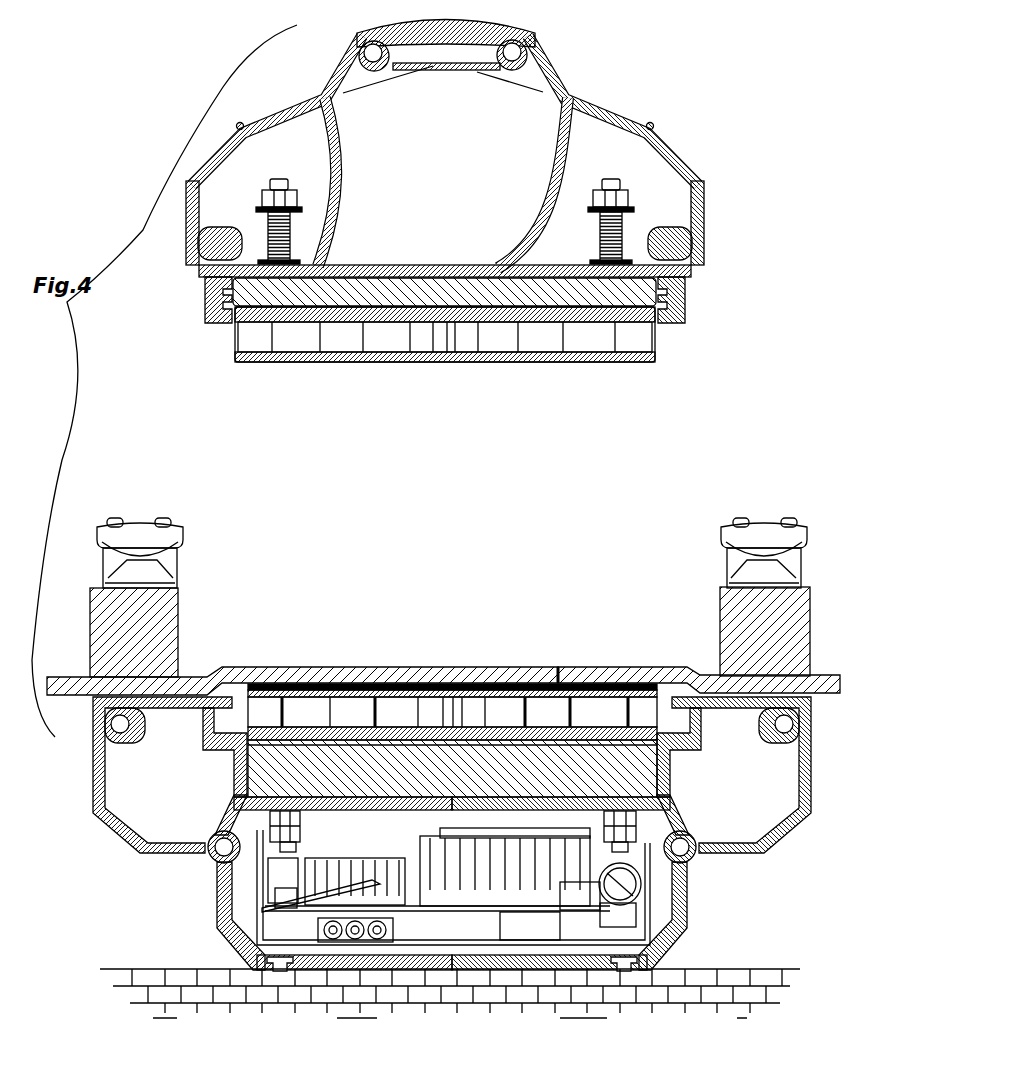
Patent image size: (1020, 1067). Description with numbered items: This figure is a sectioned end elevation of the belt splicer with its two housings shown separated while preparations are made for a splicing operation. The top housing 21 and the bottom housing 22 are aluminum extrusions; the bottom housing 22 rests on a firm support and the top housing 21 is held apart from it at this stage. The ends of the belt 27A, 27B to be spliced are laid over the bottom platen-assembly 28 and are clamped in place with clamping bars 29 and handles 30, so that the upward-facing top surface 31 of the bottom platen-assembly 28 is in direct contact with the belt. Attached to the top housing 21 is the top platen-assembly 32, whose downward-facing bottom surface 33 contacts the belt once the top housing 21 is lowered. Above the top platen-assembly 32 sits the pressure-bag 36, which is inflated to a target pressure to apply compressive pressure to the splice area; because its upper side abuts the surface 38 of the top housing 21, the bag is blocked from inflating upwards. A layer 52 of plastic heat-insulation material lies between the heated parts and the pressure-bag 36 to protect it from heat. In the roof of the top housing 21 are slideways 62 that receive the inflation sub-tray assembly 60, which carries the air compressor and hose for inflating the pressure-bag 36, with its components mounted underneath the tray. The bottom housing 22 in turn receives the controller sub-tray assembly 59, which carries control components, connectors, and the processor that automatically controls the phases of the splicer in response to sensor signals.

The top housing 21 is at (637, 117).
The slideways 62 is at (519, 50).
The inflation sub-tray assembly 60 is at (453, 70).
The surface of the top housing 38 is at (420, 265).
The layer of plastic heat-insulation material 52 is at (290, 317).
The bottom surface of the top platen-assembly 33 is at (380, 362).
The top platen-assembly 32 is at (500, 338).
The pressure-bag 36 is at (592, 290).
The handles 30 is at (147, 530).
The clamping bars 29 is at (165, 628).
The belt end 27A is at (345, 680).
The belt end 27B is at (583, 680).
The top surface of the bottom platen-assembly 31 is at (418, 693).
The bottom platen-assembly 28 is at (508, 710).
The bottom housing 22 is at (800, 812).
The controller sub-tray assembly 59 is at (660, 895).